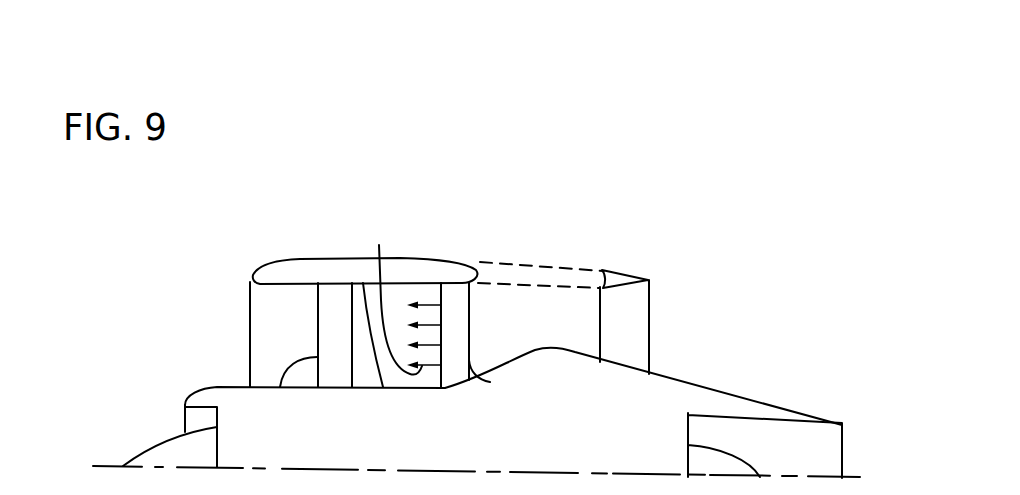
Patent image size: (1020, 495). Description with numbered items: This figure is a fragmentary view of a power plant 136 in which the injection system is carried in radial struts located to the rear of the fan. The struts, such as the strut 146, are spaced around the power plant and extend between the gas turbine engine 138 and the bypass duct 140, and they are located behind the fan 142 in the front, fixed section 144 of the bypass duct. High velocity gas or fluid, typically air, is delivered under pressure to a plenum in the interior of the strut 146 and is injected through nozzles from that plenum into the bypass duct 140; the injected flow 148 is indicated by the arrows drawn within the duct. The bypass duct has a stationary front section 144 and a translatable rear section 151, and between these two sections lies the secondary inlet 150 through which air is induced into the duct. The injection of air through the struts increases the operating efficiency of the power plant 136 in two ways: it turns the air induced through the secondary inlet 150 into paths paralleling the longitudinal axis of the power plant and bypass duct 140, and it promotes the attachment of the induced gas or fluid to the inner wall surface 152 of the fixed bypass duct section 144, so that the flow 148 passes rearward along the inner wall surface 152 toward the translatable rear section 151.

The power plant 136 is at (212, 337).
The gas turbine engine 138 is at (626, 357).
The bypass duct 140 is at (493, 218).
The fan 142 is at (280, 387).
The front fixed section of the bypass duct 144 is at (253, 274).
The strut 146 is at (490, 382).
The cooling passage 148 is at (417, 303).
The secondary inlet 150 is at (548, 278).
The translatable rear section of the bypass duct 151 is at (630, 283).
The inner wall surface 152 is at (383, 387).